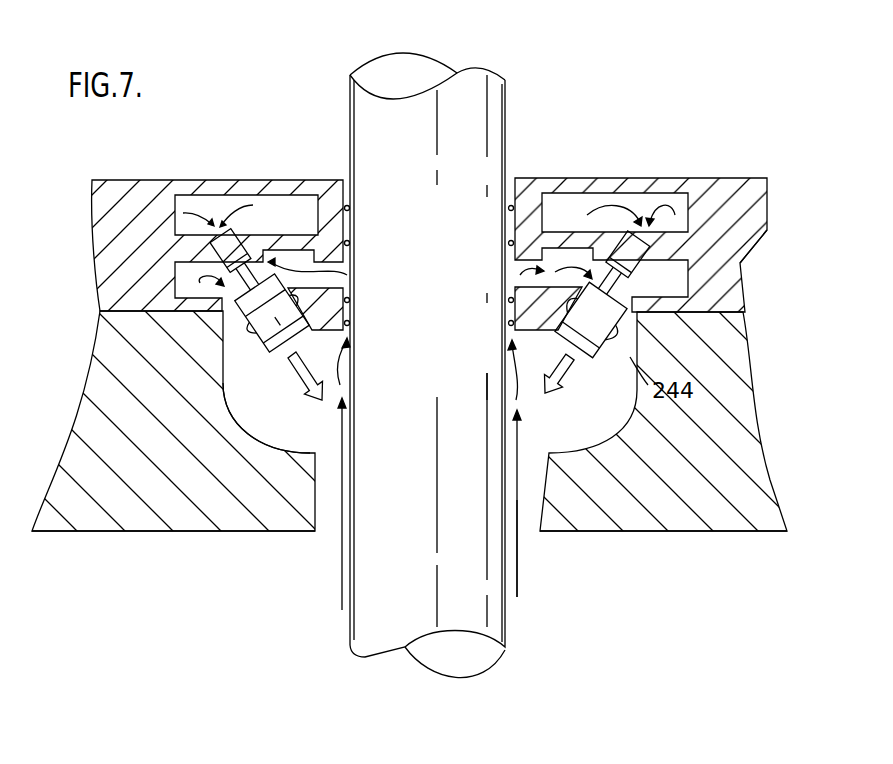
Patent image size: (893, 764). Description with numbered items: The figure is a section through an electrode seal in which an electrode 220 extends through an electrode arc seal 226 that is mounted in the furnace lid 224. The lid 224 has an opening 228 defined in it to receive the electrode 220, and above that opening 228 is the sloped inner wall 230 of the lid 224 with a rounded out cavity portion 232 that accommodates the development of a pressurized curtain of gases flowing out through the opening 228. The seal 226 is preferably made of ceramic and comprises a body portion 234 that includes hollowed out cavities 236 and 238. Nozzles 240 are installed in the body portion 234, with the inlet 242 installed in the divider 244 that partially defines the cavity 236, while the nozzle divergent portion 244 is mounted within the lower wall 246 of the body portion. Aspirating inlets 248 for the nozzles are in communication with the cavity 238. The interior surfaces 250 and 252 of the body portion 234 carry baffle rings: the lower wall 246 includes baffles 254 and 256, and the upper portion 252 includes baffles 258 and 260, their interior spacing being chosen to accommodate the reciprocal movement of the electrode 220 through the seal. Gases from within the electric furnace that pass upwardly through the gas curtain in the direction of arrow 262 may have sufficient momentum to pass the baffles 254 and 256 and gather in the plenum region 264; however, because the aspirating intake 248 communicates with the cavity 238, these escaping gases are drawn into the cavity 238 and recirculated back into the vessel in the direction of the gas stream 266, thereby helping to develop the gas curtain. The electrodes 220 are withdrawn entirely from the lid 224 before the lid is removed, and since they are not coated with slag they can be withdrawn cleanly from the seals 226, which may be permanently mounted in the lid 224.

The electrode 220 is at (503, 123).
The lid 224 is at (723, 385).
The electrode arc seal 226 is at (718, 172).
The opening 228 is at (318, 532).
The sloped inner wall 230 is at (320, 476).
The rounded out cavity portion 232 is at (246, 386).
The body portion 234 is at (145, 200).
The cavity 236 is at (263, 207).
The cavity 238 is at (737, 266).
The nozzles 240 is at (218, 318).
The inlet 242 is at (205, 244).
The divider 244 is at (275, 240).
The lower wall 246 is at (625, 325).
The aspirating inlets 248 is at (617, 288).
The interior surface 250 is at (350, 309).
The interior surface 252 is at (506, 227).
The baffle 254 is at (503, 338).
The baffle 256 is at (508, 303).
The baffle 258 is at (510, 243).
The baffle 260 is at (508, 208).
The arrow 262 is at (520, 533).
The plenum region 264 is at (497, 270).
The gas stream 266 is at (572, 373).